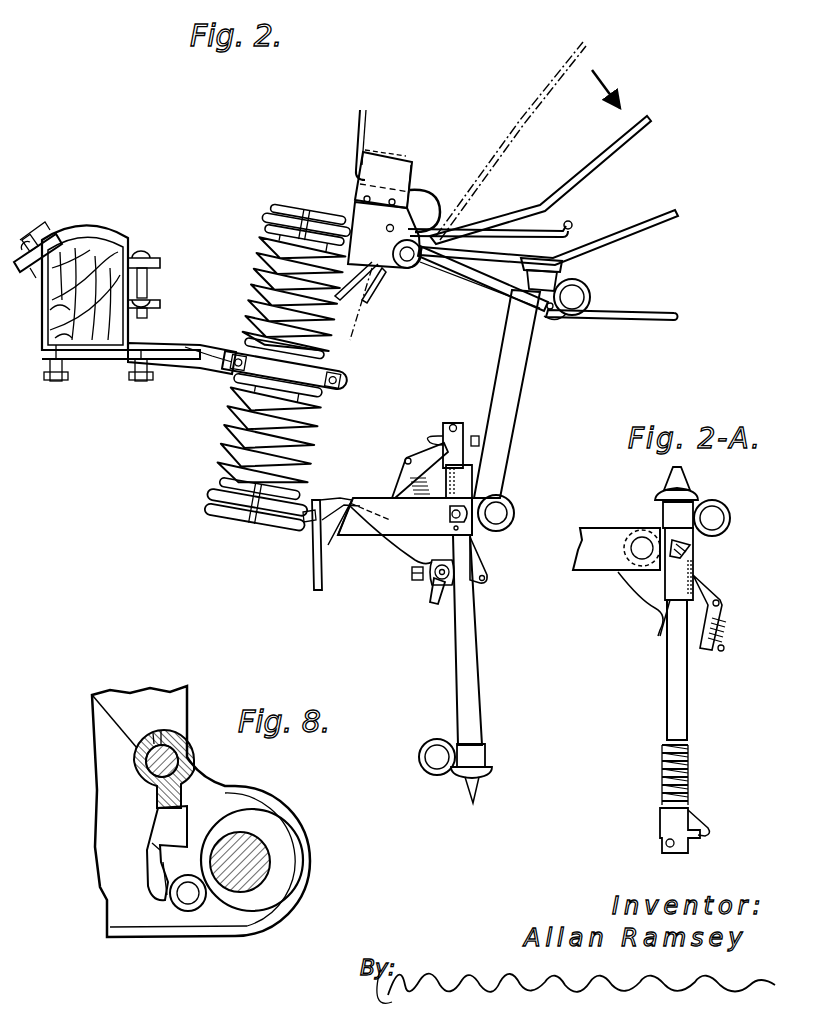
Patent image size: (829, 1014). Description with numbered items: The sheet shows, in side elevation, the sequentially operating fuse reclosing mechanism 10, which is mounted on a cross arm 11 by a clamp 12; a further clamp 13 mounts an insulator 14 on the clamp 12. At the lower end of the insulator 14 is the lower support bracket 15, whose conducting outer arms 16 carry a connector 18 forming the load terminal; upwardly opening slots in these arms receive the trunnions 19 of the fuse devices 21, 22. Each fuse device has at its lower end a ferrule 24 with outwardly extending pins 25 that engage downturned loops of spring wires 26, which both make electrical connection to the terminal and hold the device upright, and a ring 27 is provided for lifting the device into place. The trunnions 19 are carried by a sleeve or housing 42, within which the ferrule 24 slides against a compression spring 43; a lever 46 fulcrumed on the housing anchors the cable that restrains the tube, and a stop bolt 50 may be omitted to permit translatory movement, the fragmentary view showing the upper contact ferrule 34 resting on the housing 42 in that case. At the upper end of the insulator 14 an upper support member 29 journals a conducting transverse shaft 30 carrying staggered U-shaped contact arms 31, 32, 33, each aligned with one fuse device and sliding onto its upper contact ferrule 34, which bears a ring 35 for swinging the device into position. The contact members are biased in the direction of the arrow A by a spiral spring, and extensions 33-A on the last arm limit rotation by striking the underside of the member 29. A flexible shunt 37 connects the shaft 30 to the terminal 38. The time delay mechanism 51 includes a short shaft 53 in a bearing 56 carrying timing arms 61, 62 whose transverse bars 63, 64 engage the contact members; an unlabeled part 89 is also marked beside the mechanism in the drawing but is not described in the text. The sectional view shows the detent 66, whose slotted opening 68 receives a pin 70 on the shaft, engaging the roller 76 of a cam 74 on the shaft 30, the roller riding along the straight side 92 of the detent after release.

In FIG. 2, the sequentially operating fuse reclosing mechanism 10 is at (491, 74).
In FIG. 2, the cross arm 11 is at (92, 244).
In FIG. 2, the clamp 12 is at (143, 256).
In FIG. 2, the clamp 13 is at (210, 345).
In FIG. 2, the insulator 14 is at (266, 268).
In FIG. 2, the lower support bracket 15 is at (368, 538).
In FIG. 2-A, the lower support bracket 15 is at (612, 575).
In FIG. 2, the outer arms 16 is at (368, 498).
In FIG. 2-A, the outer arms 16 is at (598, 540).
In FIG. 2, the connector 18 is at (313, 577).
In FIG. 2, the trunnions 19 is at (468, 514).
In FIG. 2-A, the trunnions 19 is at (693, 551).
In FIG. 2, the fuse device 21 is at (470, 668).
In FIG. 2-A, the fuse device 21 is at (668, 694).
In FIG. 2, the fuse device 22 is at (503, 403).
In FIG. 2, the ferrule 24 is at (445, 428).
In FIG. 2-A, the ferrule 24 is at (688, 849).
In FIG. 2, the pins 25 is at (455, 425).
In FIG. 2-A, the pins 25 is at (664, 842).
In FIG. 2, the spring wires 26 is at (412, 553).
In FIG. 2-A, the spring wires 26 is at (638, 598).
In FIG. 2, the ring 27 is at (512, 506).
In FIG. 2-A, the ring 27 is at (642, 530).
In FIG. 2, the upper support member 29 is at (380, 270).
In FIG. 8, the upper support member 29 is at (306, 890).
In FIG. 2, the transverse shaft 30 is at (409, 262).
In FIG. 8, the transverse shaft 30 is at (266, 860).
In FIG. 2, the contact arm 31 is at (667, 318).
In FIG. 2, the contact arm 32 is at (672, 222).
In FIG. 2, the contact arm 33 is at (583, 47).
In FIG. 2, the extensions 33-A is at (395, 290).
In FIG. 2, the upper contact ferrule 34 is at (560, 272).
In FIG. 2-A, the upper contact ferrule 34 is at (690, 488).
In FIG. 2, the ring 35 is at (590, 287).
In FIG. 2-A, the ring 35 is at (732, 514).
In FIG. 2, the flexible shunt 37 is at (434, 196).
In FIG. 2, the terminal 38 is at (358, 121).
In FIG. 2, the sleeve or housing 42 is at (472, 482).
In FIG. 2-A, the sleeve or housing 42 is at (695, 577).
In FIG. 2-A, the compression spring 43 is at (690, 775).
In FIG. 2, the lever 46 is at (402, 470).
In FIG. 2-A, the lever 46 is at (722, 612).
In FIG. 2, the stop bolt 50 is at (482, 440).
In FIG. 2, the time delay mechanism 51 is at (388, 150).
In FIG. 2, the short shaft 53 is at (388, 231).
In FIG. 8, the bearing 56 is at (174, 732).
In FIG. 2, the timing arm 61 is at (472, 280).
In FIG. 2, the timing arm 62 is at (499, 228).
In FIG. 2, the transverse bar 63 is at (590, 297).
In FIG. 2, the transverse bar 64 is at (573, 224).
In FIG. 8, the detent 66 is at (156, 798).
In FIG. 8, the slotted opening 68 is at (140, 757).
In FIG. 8, the pin 70 is at (152, 745).
In FIG. 8, the cam 74 is at (280, 832).
In FIG. 8, the roller 76 is at (186, 908).
In FIG. 2, the plate edge 89 is at (413, 166).
In FIG. 8, the straight side 92 is at (186, 822).
In FIG. 2, the arrow A is at (598, 98).